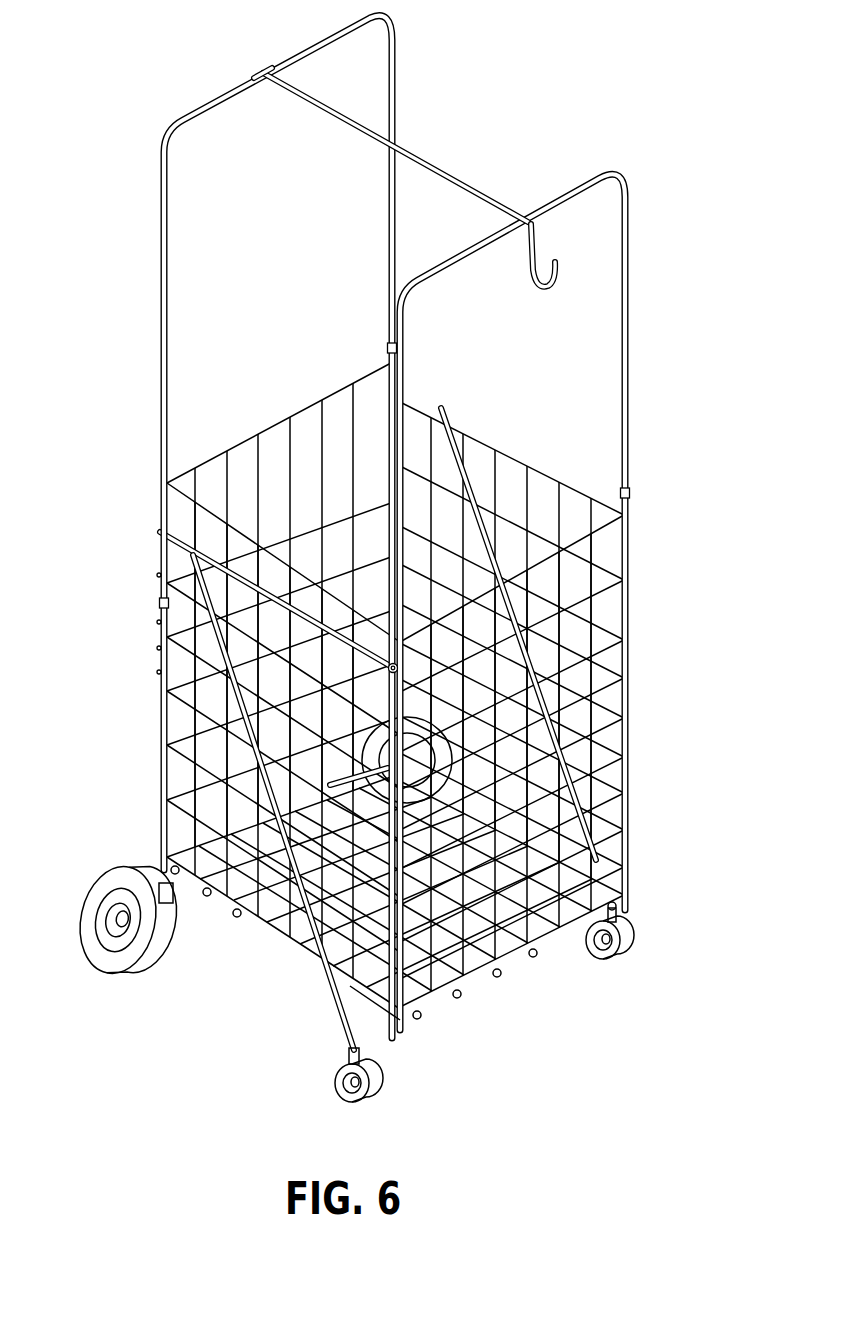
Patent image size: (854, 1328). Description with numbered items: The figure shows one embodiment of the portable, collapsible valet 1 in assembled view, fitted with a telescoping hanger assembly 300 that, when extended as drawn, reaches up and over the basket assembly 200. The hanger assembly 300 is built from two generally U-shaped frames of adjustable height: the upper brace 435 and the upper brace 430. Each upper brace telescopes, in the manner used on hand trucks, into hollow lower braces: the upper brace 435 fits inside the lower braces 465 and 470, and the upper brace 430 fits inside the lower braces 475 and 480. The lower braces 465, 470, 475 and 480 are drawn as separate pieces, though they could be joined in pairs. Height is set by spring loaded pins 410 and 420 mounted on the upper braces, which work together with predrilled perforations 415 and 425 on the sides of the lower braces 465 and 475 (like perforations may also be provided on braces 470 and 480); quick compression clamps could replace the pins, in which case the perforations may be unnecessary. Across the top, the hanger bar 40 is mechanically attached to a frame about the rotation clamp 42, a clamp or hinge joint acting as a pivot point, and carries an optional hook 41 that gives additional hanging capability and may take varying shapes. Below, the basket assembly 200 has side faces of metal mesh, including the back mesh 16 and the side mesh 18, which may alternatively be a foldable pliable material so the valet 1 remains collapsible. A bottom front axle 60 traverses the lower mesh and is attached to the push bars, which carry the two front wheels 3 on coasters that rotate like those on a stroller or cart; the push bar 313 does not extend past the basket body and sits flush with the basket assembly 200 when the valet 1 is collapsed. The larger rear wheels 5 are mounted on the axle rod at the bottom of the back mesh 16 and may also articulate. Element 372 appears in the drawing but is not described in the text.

The valet 1 is at (697, 825).
The wheels 3 is at (345, 1096).
The wheels 5 is at (110, 958).
The back mesh 16 is at (195, 493).
The side mesh 18 is at (592, 776).
The hanger bar 40 is at (455, 172).
The hook 41 is at (554, 262).
The rotation clamp 42 is at (258, 68).
The bottom front axle 60 is at (363, 1016).
The basket assembly 200 is at (645, 857).
The hanger assembly 300 is at (641, 418).
The push bar 313 is at (470, 470).
The front support bar 372 is at (322, 986).
The spring loaded pin 410 is at (160, 536).
The perforations 415 is at (160, 604).
The spring loaded pin 420 is at (385, 672).
The perforations 425 is at (368, 770).
The upper brace 430 is at (631, 320).
The upper brace 435 is at (397, 82).
The lower brace 465 is at (160, 650).
The lower brace 470 is at (388, 372).
The lower brace 475 is at (432, 1000).
The lower brace 480 is at (630, 682).